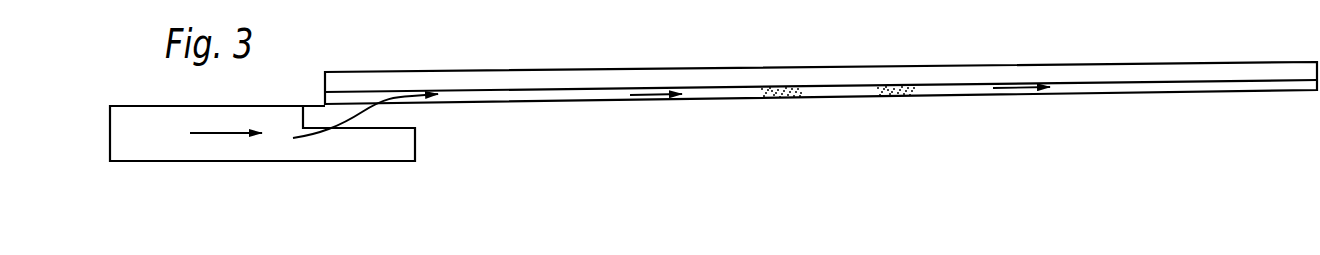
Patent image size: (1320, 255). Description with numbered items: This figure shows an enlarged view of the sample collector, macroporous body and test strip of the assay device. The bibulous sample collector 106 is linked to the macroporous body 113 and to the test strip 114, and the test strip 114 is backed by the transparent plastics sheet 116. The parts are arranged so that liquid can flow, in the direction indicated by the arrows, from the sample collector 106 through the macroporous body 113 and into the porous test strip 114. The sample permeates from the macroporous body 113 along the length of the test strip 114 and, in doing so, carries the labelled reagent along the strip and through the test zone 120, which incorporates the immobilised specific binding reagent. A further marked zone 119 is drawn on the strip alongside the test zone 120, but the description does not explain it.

The bibulous sample collector 106 is at (238, 147).
The macroporous body 113 is at (402, 117).
The test strip 114 is at (1172, 90).
The transparent plastics sheet 116 is at (520, 77).
The first reagent / detection zone 119 is at (777, 100).
The test zone 120 is at (895, 100).